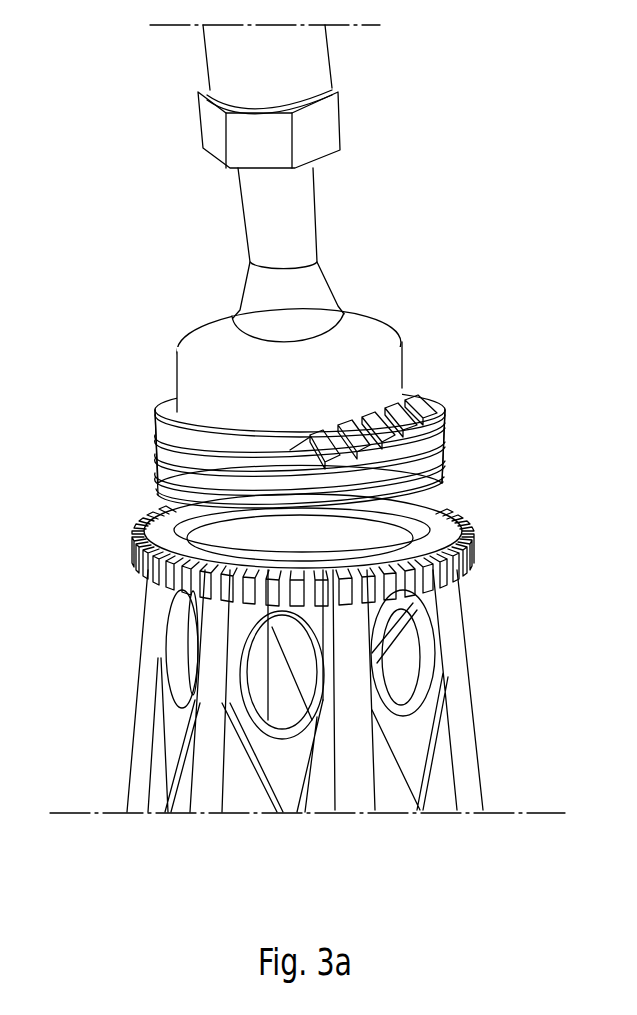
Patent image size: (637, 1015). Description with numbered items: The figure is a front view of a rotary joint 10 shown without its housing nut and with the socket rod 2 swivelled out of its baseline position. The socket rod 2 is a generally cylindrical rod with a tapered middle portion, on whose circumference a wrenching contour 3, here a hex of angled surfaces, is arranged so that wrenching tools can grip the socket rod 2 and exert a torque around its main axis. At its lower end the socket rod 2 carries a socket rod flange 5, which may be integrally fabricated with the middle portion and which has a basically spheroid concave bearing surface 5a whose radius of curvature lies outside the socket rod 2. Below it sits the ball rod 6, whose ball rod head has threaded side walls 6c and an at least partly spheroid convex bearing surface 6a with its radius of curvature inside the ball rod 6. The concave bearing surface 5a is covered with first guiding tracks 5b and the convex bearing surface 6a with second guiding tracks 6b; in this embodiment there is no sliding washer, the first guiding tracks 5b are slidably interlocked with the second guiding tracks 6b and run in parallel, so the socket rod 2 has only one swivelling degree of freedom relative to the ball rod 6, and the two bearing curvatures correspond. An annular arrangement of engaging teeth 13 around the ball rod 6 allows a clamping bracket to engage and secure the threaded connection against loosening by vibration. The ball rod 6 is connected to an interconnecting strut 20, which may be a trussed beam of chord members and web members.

The socket rod 2 is at (314, 200).
The wrenching contour 3 is at (342, 120).
The socket rod flange 5 is at (295, 349).
The concave bearing surface 5a is at (178, 393).
The first guiding tracks 5b is at (430, 443).
The ball rod 6 is at (287, 440).
The convex bearing surface 6a is at (178, 422).
The second guiding tracks 6b is at (410, 427).
The threaded side walls 6c is at (157, 468).
The rotary joint 10 is at (112, 202).
The engaging teeth 13 is at (137, 547).
The interconnecting strut 20 is at (133, 733).